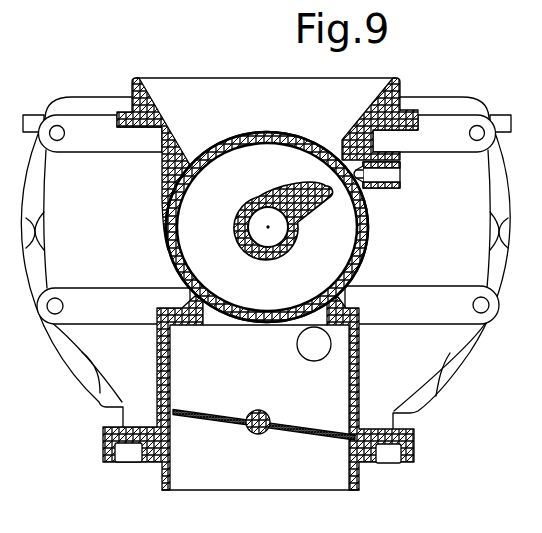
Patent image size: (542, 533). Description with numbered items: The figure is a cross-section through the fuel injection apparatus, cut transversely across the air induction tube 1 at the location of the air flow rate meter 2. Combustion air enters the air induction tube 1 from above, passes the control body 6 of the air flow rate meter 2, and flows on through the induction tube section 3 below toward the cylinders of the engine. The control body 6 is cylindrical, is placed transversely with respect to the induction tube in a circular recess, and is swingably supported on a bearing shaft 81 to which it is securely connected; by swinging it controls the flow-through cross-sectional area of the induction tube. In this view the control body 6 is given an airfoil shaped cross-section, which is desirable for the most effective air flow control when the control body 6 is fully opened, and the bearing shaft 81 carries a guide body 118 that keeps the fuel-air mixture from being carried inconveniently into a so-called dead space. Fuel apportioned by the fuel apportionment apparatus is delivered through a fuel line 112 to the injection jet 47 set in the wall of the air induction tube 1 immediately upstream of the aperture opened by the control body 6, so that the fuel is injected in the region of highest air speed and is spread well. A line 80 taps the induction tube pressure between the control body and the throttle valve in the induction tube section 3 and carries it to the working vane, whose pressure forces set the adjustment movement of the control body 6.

The air induction tube 1 is at (203, 102).
The air flow rate meter 2 is at (307, 131).
The induction tube section 3 is at (258, 393).
The control body 6 is at (256, 140).
The injection jet 47 is at (368, 184).
The line 80 is at (322, 356).
The bearing shaft 81 is at (246, 208).
The fuel line 112 is at (392, 176).
The guide body 118 is at (308, 212).